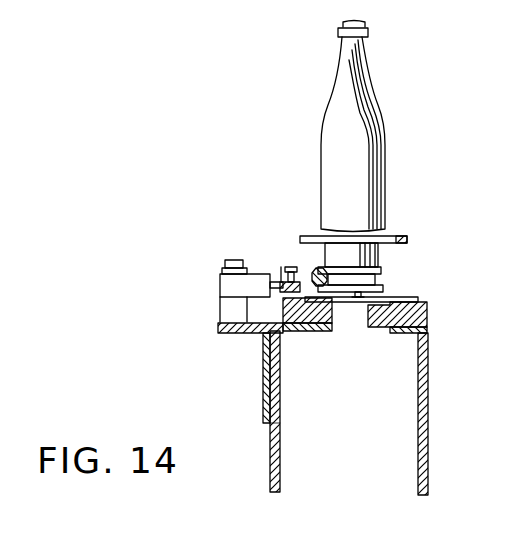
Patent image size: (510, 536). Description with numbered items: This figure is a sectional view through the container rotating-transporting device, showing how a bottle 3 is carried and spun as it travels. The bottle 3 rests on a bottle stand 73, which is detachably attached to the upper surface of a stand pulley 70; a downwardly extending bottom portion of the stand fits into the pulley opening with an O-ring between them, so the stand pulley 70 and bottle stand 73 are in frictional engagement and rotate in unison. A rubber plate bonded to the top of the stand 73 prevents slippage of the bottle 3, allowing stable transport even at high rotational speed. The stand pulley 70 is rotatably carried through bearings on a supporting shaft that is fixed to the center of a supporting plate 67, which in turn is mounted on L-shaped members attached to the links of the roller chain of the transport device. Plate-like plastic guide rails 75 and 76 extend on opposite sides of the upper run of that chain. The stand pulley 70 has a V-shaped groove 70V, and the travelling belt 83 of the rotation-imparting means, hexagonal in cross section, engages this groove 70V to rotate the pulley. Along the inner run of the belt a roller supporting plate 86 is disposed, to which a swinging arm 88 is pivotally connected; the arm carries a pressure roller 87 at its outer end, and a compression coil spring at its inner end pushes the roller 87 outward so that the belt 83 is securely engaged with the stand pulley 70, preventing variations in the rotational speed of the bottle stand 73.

The bottle 3 is at (323, 147).
The bottle stand 73 is at (398, 238).
The stand pulley 70 is at (381, 254).
The V-shaped groove 70V is at (383, 281).
The travelling belt 83 is at (316, 268).
The pressure roller 87 is at (281, 266).
The roller supporting plate 86 is at (228, 283).
The swinging arm 88 is at (283, 295).
The guide rail 75 is at (315, 331).
The guide rail 76 is at (377, 333).
The supporting plate 67 is at (358, 302).